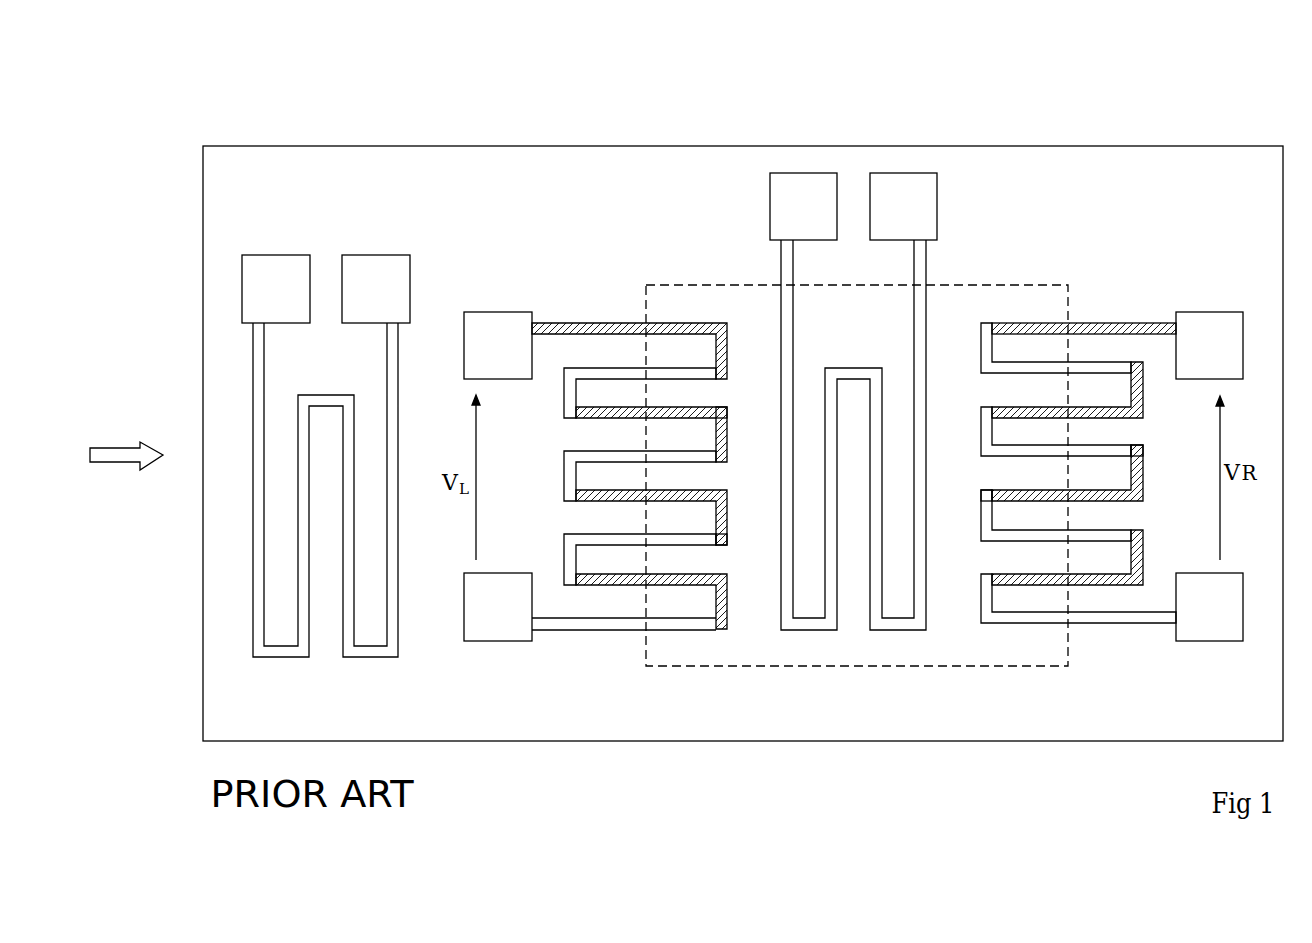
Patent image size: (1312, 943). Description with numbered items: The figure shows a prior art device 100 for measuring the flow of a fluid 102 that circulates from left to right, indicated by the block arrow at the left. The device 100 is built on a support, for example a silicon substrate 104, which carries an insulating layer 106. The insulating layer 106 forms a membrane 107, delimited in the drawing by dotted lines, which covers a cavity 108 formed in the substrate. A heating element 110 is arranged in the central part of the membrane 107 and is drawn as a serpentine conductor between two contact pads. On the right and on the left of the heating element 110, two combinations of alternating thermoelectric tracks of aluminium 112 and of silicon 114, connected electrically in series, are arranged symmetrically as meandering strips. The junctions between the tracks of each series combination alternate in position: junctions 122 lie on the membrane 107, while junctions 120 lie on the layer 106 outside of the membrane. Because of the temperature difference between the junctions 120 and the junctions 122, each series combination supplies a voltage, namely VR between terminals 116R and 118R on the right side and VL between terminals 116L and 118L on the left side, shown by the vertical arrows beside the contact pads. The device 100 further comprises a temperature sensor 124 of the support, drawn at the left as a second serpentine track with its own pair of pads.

The device 100 is at (168, 78).
The fluid 102 is at (113, 463).
The silicon substrate 104 is at (500, 145).
The insulating layer 106 is at (1102, 155).
The membrane 107 is at (992, 292).
The cavity 108 is at (1052, 285).
The heating element 110 is at (807, 631).
The thermoelectric tracks of aluminium 112 is at (567, 542).
The thermoelectric tracks of silicon 114 is at (600, 497).
The terminal 116L is at (491, 321).
The terminal 116R is at (1207, 310).
The terminal 118L is at (501, 631).
The terminal 118R is at (1217, 632).
The junctions 120 is at (567, 413).
The junctions 122 is at (722, 538).
The temperature sensor 124 is at (378, 658).